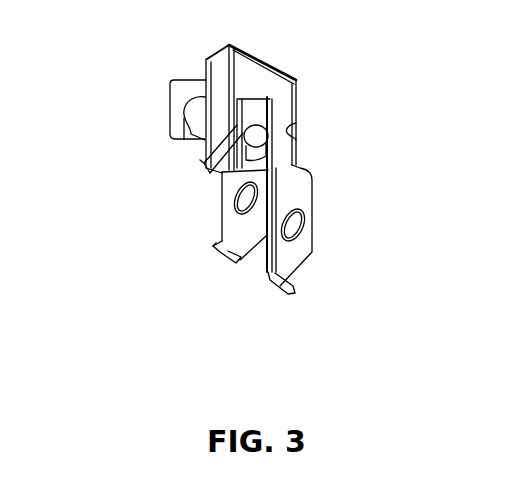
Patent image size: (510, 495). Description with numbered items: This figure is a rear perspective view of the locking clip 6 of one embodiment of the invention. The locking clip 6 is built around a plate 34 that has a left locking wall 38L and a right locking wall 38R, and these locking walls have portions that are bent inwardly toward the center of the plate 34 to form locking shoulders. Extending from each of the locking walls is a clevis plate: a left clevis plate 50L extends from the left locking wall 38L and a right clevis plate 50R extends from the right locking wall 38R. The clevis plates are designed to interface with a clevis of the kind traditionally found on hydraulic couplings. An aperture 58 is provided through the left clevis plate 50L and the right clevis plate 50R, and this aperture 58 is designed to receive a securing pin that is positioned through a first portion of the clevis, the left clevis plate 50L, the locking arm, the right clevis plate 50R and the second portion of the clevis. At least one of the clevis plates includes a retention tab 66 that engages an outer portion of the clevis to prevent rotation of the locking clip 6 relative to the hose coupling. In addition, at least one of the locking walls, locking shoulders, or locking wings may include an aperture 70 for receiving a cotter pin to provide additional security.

The locking clip 6 is at (352, 306).
The plate 34 is at (266, 72).
The left locking wall 38L is at (219, 59).
The right locking wall 38R is at (284, 133).
The left clevis plate 50L is at (238, 227).
The right clevis plate 50R is at (300, 184).
The aperture 58 is at (300, 221).
The retention tab 66 is at (214, 251).
The aperture 70 is at (188, 142).